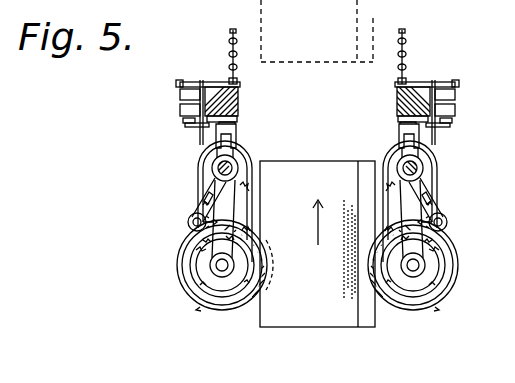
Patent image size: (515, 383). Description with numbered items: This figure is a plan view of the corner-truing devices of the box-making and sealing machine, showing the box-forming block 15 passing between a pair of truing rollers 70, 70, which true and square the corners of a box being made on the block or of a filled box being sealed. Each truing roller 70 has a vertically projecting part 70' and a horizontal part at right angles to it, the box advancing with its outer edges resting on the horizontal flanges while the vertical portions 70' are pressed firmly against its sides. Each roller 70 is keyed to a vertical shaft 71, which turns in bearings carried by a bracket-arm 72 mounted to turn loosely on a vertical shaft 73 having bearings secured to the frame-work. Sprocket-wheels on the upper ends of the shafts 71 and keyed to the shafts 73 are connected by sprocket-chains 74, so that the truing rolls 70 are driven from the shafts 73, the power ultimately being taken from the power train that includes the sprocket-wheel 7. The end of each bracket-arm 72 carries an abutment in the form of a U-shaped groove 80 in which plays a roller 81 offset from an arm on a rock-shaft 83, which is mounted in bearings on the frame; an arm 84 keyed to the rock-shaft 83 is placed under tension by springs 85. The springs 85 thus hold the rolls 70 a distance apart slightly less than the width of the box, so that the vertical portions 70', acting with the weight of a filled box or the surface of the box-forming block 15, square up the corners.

The sprocket-wheel 7 is at (240, 100).
The box-forming block 15 is at (336, 62).
The truing roller 70 is at (311, 269).
The vertically projecting part 70' is at (311, 263).
The vertical shaft 71 is at (220, 268).
The bracket-arm 72 is at (206, 222).
The vertical shaft 73 is at (212, 168).
The sprocket-chain 74 is at (247, 206).
The U-shaped groove 80 is at (236, 133).
The roller 81 is at (237, 119).
The rock-shaft 83 is at (185, 100).
The arm 84 is at (214, 82).
The spring 85 is at (238, 66).